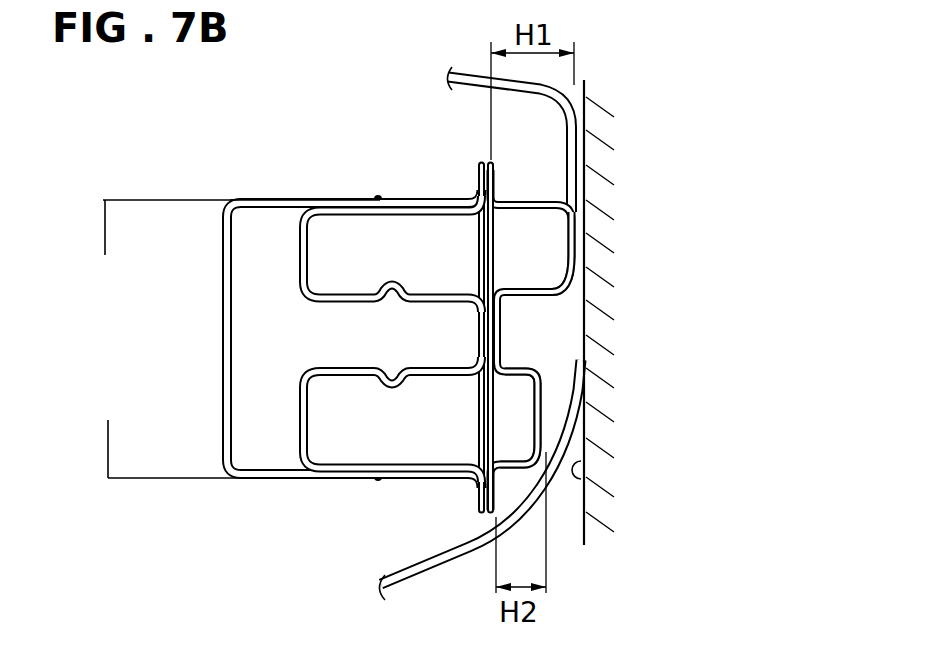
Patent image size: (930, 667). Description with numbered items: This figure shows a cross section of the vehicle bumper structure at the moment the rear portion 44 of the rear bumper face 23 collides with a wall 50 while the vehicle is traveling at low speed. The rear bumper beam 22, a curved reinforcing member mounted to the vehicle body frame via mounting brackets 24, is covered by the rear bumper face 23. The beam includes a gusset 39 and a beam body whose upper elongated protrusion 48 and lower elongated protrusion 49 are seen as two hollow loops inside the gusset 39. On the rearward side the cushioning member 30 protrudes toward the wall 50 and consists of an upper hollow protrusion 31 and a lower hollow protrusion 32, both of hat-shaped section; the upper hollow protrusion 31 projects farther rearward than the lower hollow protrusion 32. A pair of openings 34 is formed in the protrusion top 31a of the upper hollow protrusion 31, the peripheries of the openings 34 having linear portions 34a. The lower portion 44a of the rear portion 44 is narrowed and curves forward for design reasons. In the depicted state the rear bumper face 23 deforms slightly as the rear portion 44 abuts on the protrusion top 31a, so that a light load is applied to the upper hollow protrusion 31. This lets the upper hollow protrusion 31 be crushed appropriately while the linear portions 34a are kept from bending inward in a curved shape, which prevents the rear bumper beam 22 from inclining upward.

The rear bumper beam 22 is at (299, 184).
The rear bumper face 23 is at (555, 87).
The mounting bracket 24 is at (156, 478).
The cushioning member 30 is at (561, 197).
The upper hollow protrusion 31 is at (577, 213).
The protrusion top 31a is at (584, 272).
The lower hollow protrusion 32 is at (543, 404).
The opening 34 is at (582, 245).
The linear portion 34a is at (571, 230).
The gusset 39 is at (222, 335).
The rear portion 44 is at (598, 122).
The lower portion 44a is at (552, 490).
The upper elongated protrusion 48 is at (300, 258).
The lower elongated protrusion 49 is at (300, 420).
The wall 50 is at (588, 480).